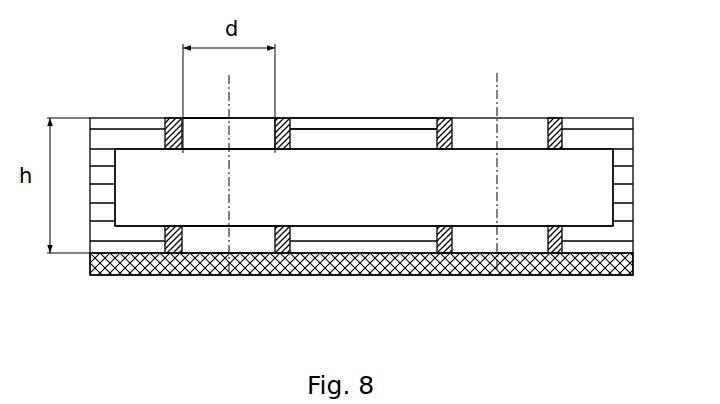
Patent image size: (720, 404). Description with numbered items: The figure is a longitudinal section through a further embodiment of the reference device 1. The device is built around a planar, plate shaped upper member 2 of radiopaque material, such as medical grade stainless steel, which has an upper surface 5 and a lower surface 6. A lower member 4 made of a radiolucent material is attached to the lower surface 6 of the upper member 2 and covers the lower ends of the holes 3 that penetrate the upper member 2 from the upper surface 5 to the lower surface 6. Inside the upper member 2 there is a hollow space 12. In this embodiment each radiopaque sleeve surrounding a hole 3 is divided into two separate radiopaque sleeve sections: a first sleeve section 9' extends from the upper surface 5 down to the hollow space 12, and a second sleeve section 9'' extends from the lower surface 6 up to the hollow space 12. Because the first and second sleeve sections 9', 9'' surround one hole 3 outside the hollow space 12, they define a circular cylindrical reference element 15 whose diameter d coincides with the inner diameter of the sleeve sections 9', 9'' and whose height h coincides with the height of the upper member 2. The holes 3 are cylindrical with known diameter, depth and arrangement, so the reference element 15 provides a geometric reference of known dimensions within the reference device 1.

The reference device 1 is at (578, 33).
The upper member 2 is at (618, 178).
The hole 3 is at (248, 133).
The lower member 4 is at (618, 275).
The upper surface 5 is at (342, 117).
The lower surface 6 is at (287, 253).
The first sleeve section 9' is at (118, 106).
The second sleeve section 9'' is at (156, 279).
The hollow space 12 is at (567, 180).
The reference element 15 is at (210, 117).